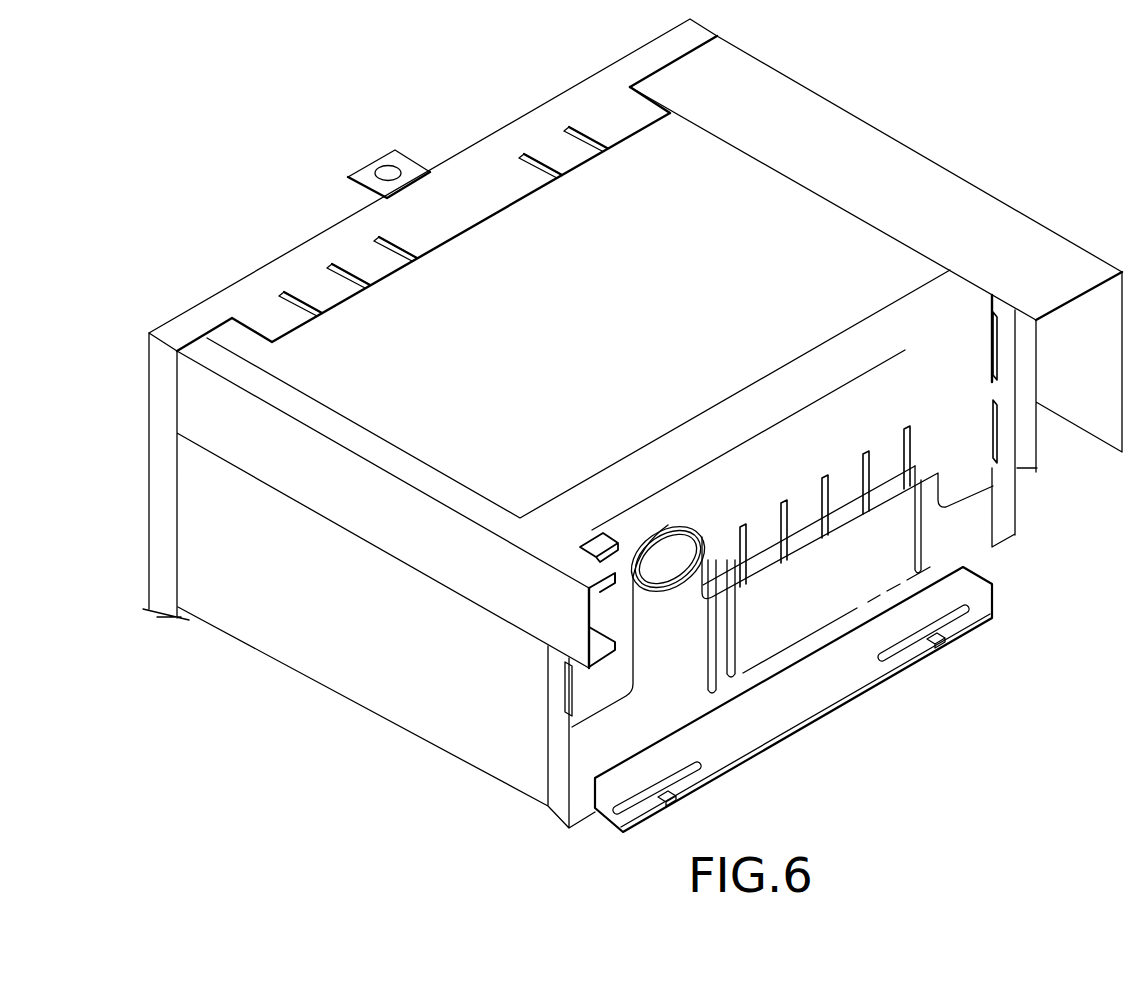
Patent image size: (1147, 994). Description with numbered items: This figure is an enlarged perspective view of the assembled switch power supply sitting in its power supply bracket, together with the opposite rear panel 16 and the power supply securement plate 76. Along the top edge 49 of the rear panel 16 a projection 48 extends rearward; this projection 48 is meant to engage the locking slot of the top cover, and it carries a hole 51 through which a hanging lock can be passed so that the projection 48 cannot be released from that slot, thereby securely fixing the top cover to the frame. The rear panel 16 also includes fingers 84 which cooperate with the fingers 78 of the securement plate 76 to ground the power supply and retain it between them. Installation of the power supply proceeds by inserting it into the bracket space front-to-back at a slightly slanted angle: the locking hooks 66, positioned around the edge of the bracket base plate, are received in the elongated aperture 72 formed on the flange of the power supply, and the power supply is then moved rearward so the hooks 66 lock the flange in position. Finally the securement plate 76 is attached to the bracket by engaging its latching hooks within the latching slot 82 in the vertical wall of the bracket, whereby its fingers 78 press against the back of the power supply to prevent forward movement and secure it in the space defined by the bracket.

The rear panel 16 is at (160, 428).
The projection 48 is at (408, 165).
The top edge 49 is at (348, 215).
The hole 51 is at (388, 172).
The fingers 84 is at (320, 285).
The power supply securement plate 76 is at (900, 372).
The fingers 78 is at (847, 492).
The latching slot 82 is at (997, 427).
The locking hooks 66 is at (943, 640).
The elongated aperture 72 is at (890, 655).